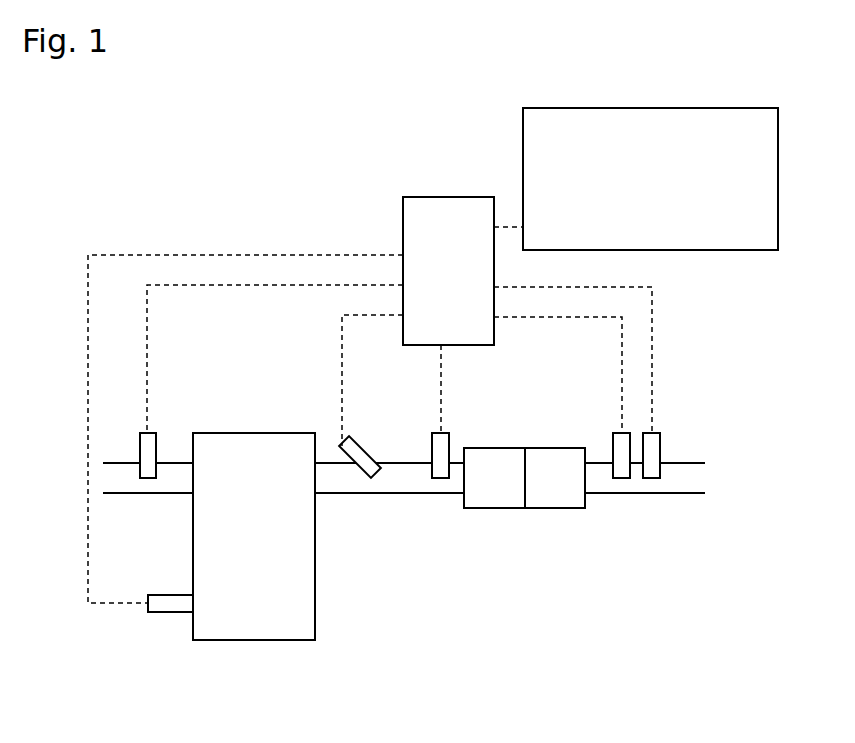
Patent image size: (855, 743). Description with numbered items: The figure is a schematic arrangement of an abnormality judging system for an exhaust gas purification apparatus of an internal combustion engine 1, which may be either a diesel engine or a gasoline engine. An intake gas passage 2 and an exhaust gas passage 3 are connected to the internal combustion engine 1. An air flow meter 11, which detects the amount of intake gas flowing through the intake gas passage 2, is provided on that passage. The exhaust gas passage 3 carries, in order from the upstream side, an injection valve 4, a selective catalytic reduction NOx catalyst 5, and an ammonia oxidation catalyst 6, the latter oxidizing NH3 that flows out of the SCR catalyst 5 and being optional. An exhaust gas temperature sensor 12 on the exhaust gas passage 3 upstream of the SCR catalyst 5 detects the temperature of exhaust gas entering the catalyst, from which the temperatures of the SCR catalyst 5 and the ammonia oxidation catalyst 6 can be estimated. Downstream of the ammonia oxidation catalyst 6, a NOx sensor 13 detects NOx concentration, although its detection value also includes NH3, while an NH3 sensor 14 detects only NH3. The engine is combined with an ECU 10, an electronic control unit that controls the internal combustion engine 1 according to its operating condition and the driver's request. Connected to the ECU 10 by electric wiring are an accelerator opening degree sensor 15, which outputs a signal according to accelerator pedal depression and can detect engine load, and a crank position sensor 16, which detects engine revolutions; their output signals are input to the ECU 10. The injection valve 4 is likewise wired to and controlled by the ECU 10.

The internal combustion engine 1 is at (253, 433).
The intake gas passage 2 is at (140, 493).
The exhaust gas passage 3 is at (332, 493).
The injection valve 4 is at (365, 436).
The selective catalytic reduction NOx catalyst 5 is at (493, 508).
The ammonia oxidation catalyst 6 is at (548, 508).
The ECU 10 is at (403, 226).
The air flow meter 11 is at (157, 436).
The exhaust gas temperature sensor 12 is at (450, 438).
The NOx sensor 13 is at (613, 437).
The NH3 sensor 14 is at (660, 440).
The accelerator opening degree sensor 15 is at (747, 250).
The crank position sensor 16 is at (168, 613).